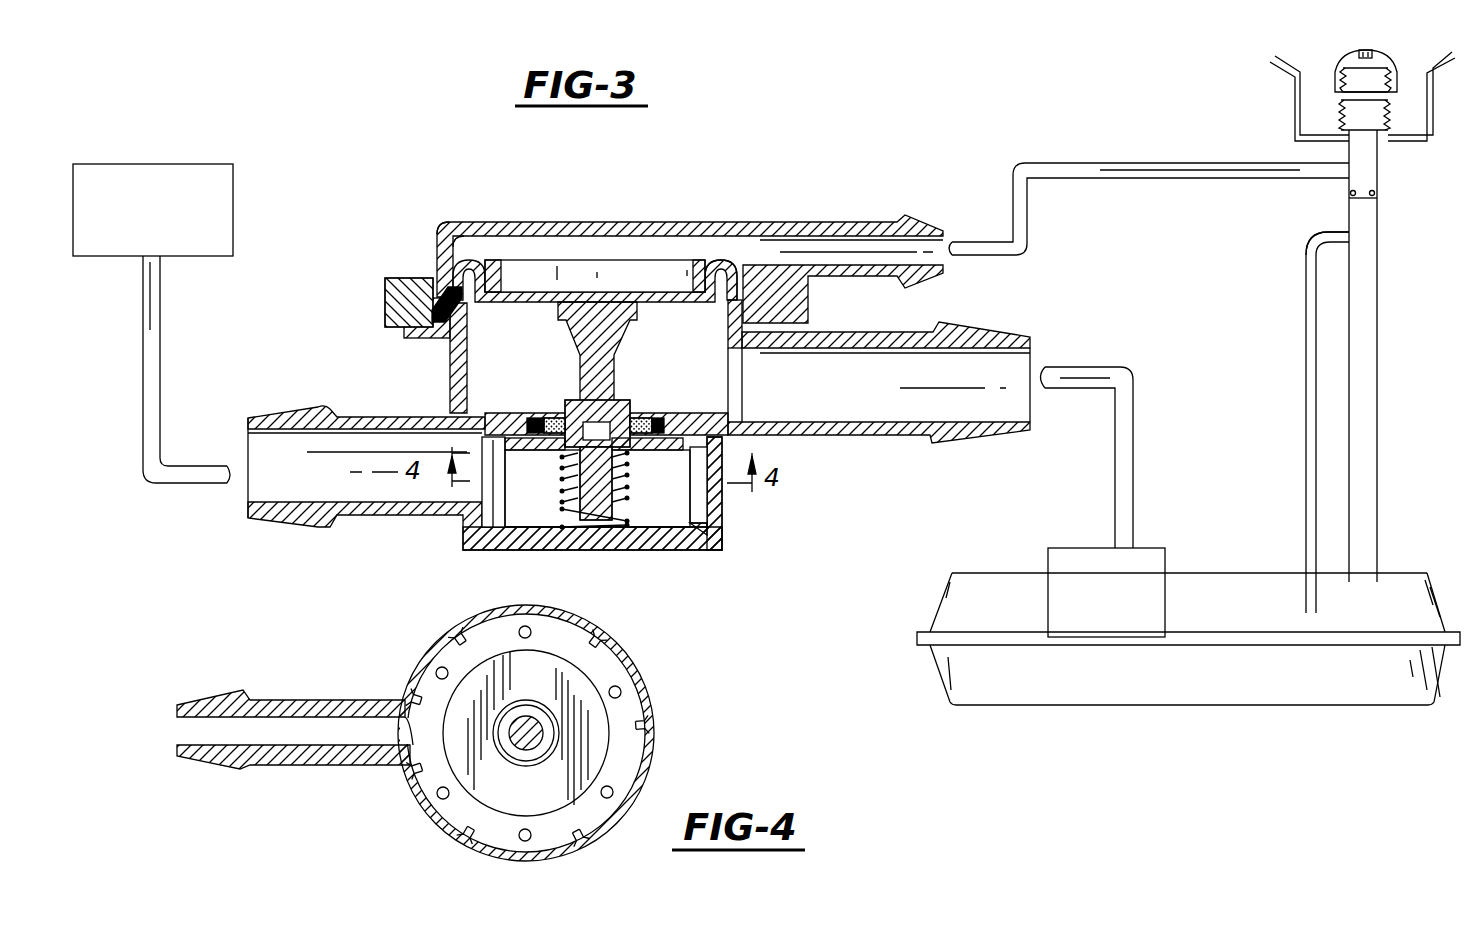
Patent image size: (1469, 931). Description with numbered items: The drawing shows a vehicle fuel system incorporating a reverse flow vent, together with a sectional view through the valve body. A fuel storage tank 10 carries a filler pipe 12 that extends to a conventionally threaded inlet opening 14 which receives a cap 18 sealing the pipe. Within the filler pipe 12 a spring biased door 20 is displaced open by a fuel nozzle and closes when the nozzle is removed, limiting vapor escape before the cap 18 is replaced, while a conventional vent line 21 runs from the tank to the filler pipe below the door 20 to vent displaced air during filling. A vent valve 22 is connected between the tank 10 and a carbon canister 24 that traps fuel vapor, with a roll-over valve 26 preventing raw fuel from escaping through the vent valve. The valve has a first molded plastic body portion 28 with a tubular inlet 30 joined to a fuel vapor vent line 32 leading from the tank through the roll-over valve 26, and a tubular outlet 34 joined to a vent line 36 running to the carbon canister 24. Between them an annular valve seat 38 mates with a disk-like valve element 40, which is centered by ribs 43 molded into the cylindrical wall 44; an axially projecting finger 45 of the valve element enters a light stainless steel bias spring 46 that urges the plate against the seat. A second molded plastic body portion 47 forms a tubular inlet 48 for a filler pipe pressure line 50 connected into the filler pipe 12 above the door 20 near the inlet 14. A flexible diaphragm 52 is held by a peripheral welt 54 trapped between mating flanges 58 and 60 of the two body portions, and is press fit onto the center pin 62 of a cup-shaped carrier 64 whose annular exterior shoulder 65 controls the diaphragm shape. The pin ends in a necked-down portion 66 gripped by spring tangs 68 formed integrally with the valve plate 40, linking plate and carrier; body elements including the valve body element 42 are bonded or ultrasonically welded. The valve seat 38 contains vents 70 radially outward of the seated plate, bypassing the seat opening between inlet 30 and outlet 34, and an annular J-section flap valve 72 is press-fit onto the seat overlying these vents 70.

In FIG. 3, the fuel storage tank 10 is at (1255, 705).
In FIG. 3, the filler pipe 12 is at (1377, 300).
In FIG. 3, the threaded inlet opening 14 is at (1390, 118).
In FIG. 3, the cap 18 is at (1336, 70).
In FIG. 3, the spring biased door 20 is at (1318, 238).
In FIG. 3, the vent line 21 is at (1306, 320).
In FIG. 3, the vent valve 22 is at (668, 218).
In FIG. 3, the carbon canister 24 is at (230, 164).
In FIG. 3, the roll-over valve 26 is at (1168, 560).
In FIG. 3, the first molded plastic body portion 28 is at (885, 438).
In FIG. 3, the tubular inlet 30 is at (1012, 360).
In FIG. 3, the fuel vapor vent line 32 is at (1133, 440).
In FIG. 3, the outlet 34 is at (256, 485).
In FIG. 4, the outlet 34 is at (180, 728).
In FIG. 3, the vent line 36 is at (160, 340).
In FIG. 3, the annular valve seat 38 is at (652, 420).
In FIG. 3, the valve element 40 is at (688, 452).
In FIG. 4, the valve element 40 is at (610, 703).
In FIG. 3, the valve body element 42 is at (612, 552).
In FIG. 3, the ribs 43 is at (693, 492).
In FIG. 4, the ribs 43 is at (435, 703).
In FIG. 3, the cylindrical wall 44 is at (722, 515).
In FIG. 4, the cylindrical wall 44 is at (645, 748).
In FIG. 3, the axially projecting finger 45 is at (562, 470).
In FIG. 4, the axially projecting finger 45 is at (530, 718).
In FIG. 3, the bias spring 46 is at (562, 510).
In FIG. 4, the bias spring 46 is at (542, 762).
In FIG. 3, the second molded plastic body portion 47 is at (470, 222).
In FIG. 3, the tubular inlet 48 is at (850, 222).
In FIG. 3, the filler pipe pressure line 50 is at (1130, 163).
In FIG. 3, the diaphragm 52 is at (522, 303).
In FIG. 3, the peripheral welt 54 is at (437, 287).
In FIG. 3, the flange 58 is at (385, 300).
In FIG. 3, the flange 60 is at (420, 338).
In FIG. 3, the center pin 62 is at (580, 380).
In FIG. 3, the cup-shaped carrier 64 is at (538, 240).
In FIG. 3, the annular exterior shoulder 65 is at (714, 302).
In FIG. 3, the necked-down portion 66 is at (533, 420).
In FIG. 3, the spring tangs 68 is at (630, 402).
In FIG. 3, the vents 70 is at (730, 447).
In FIG. 4, the vents 70 is at (438, 790).
In FIG. 3, the flap valve 72 is at (478, 416).